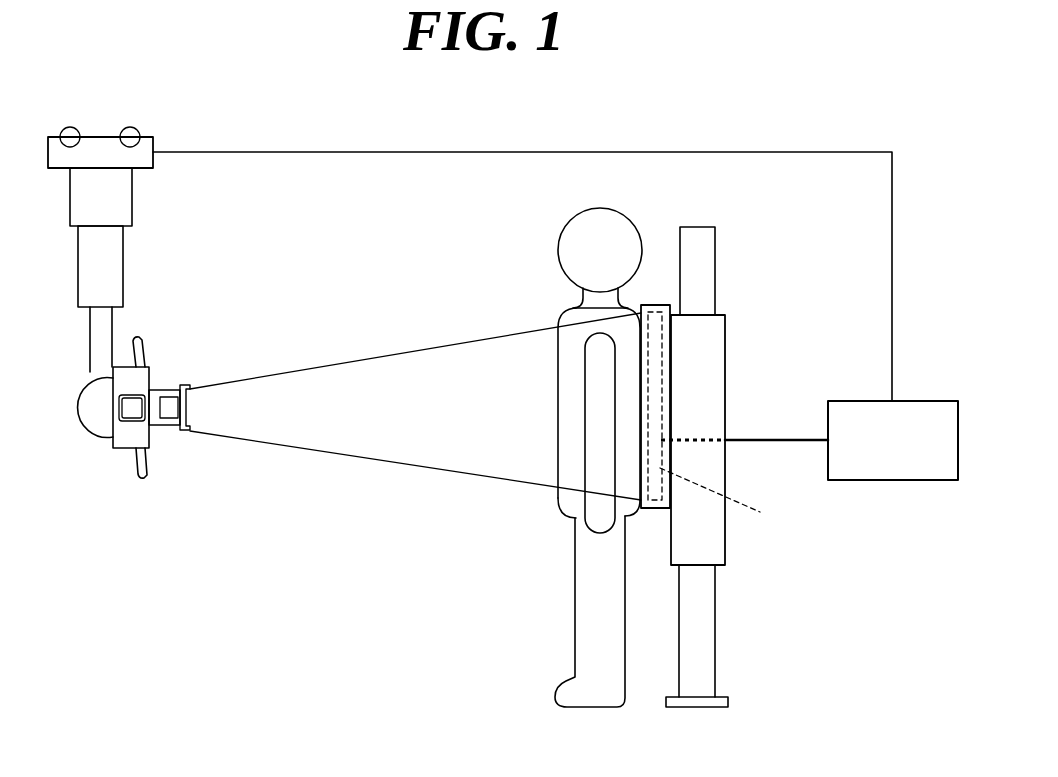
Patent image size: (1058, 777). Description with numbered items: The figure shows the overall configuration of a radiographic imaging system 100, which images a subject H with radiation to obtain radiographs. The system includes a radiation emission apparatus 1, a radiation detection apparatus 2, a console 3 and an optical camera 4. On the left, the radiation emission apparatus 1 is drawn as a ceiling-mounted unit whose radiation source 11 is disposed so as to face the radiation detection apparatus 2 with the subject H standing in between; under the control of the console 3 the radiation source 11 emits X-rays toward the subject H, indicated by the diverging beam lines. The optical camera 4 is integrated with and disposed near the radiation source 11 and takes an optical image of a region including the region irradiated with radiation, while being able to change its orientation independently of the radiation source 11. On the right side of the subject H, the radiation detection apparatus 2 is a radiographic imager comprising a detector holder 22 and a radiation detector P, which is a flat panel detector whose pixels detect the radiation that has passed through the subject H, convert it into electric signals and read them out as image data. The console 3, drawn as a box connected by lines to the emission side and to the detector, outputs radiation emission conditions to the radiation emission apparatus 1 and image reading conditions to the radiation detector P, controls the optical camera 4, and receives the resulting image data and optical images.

The radiographic imaging system 100 is at (868, 139).
The radiation emission apparatus 1 is at (209, 251).
The radiation source 11 is at (90, 406).
The optical camera 4 is at (163, 398).
The detector holder 22 is at (652, 308).
The radiation detection apparatus 2 is at (720, 219).
The console 3 is at (912, 400).
The subject H is at (557, 398).
The radiation detector P is at (721, 488).